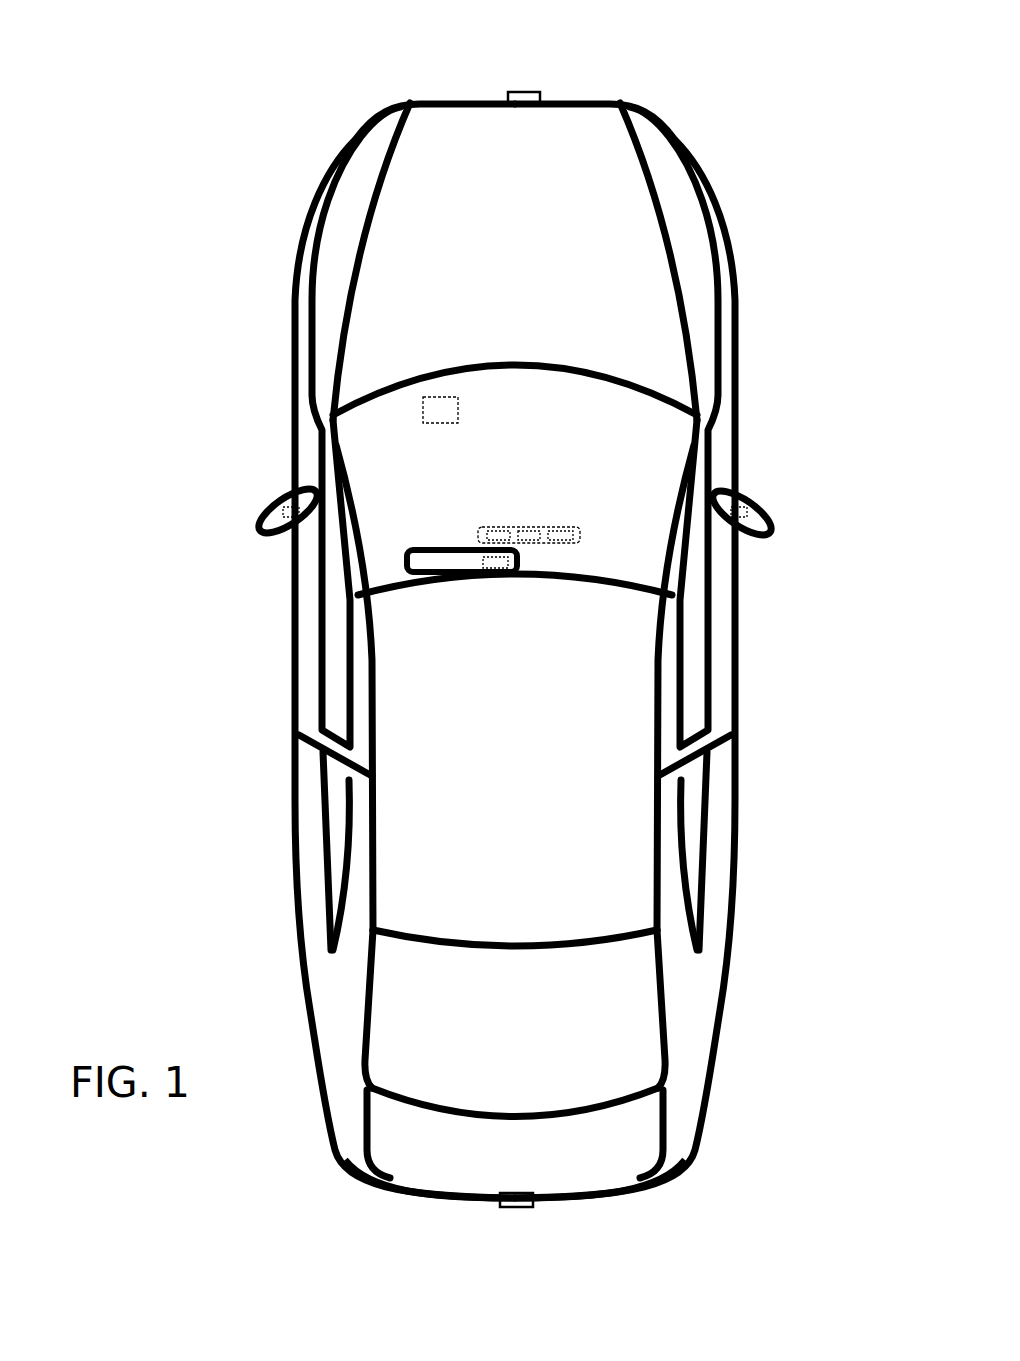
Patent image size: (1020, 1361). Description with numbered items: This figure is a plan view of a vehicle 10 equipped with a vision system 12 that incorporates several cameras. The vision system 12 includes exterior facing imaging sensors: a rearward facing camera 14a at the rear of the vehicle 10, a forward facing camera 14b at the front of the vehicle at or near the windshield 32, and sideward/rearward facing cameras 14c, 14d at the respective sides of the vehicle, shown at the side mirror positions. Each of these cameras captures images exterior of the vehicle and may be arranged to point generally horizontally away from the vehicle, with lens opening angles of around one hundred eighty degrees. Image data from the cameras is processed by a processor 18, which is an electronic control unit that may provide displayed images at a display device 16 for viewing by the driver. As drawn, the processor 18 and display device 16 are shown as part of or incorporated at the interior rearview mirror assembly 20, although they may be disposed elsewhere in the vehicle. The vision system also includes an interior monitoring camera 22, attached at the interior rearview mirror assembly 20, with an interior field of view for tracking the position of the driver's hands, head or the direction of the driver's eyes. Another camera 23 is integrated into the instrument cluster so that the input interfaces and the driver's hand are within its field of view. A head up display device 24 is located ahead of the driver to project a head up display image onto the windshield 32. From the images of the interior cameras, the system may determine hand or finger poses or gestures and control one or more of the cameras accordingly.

The vehicle 10 is at (238, 210).
The vision system 12 is at (458, 1231).
The rearward facing camera 14a is at (524, 1208).
The forward facing camera 14b is at (532, 92).
The sideward/rearward facing camera 14c is at (268, 500).
The sideward/rearward facing camera 14d is at (762, 497).
The display device 16 is at (490, 527).
The processor 18 is at (520, 528).
The interior rearview mirror assembly 20 is at (582, 530).
The interior monitoring camera 22 is at (565, 527).
The camera disposed near the central instrument cluster 23 is at (490, 553).
The head up display device 24 is at (428, 425).
The windshield 32 is at (570, 396).